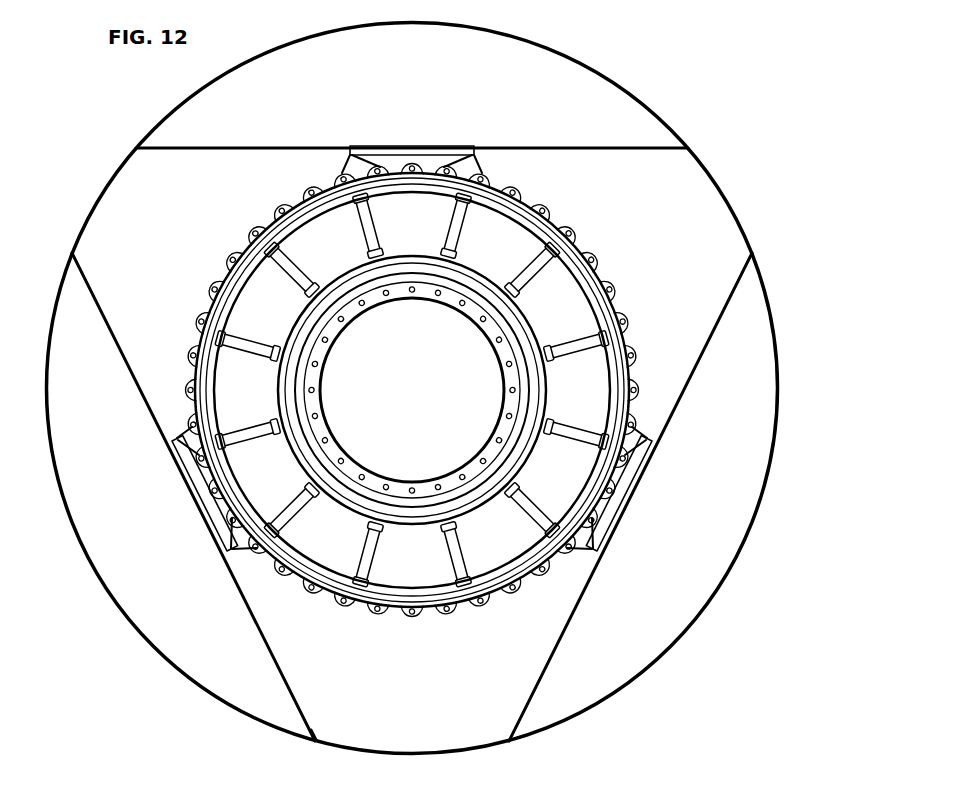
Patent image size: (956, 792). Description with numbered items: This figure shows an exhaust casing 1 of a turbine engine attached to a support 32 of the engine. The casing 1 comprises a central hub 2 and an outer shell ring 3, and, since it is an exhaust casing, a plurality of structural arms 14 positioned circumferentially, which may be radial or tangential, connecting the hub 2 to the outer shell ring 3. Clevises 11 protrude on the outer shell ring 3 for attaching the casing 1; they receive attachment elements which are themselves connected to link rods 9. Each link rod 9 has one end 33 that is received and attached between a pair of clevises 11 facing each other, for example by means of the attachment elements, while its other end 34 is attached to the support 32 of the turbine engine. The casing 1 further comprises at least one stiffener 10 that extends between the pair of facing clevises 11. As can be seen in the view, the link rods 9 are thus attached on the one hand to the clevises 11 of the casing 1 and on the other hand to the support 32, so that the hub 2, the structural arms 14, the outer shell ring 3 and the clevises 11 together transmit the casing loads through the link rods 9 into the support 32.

The casing 1 is at (419, 390).
The hub 2 is at (412, 258).
The outer shell ring 3 is at (234, 477).
The link rods 9 is at (130, 370).
The stiffener 10 is at (626, 497).
The clevises 11 is at (477, 152).
The structural arms 14 is at (470, 550).
The support 32 is at (97, 578).
The one end 33 is at (226, 563).
The other end 34 is at (320, 735).